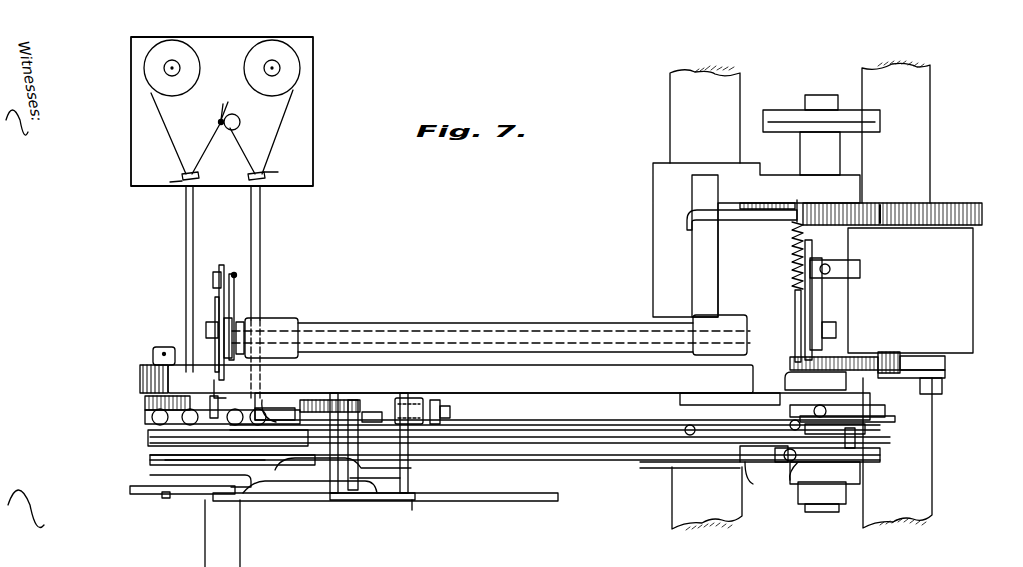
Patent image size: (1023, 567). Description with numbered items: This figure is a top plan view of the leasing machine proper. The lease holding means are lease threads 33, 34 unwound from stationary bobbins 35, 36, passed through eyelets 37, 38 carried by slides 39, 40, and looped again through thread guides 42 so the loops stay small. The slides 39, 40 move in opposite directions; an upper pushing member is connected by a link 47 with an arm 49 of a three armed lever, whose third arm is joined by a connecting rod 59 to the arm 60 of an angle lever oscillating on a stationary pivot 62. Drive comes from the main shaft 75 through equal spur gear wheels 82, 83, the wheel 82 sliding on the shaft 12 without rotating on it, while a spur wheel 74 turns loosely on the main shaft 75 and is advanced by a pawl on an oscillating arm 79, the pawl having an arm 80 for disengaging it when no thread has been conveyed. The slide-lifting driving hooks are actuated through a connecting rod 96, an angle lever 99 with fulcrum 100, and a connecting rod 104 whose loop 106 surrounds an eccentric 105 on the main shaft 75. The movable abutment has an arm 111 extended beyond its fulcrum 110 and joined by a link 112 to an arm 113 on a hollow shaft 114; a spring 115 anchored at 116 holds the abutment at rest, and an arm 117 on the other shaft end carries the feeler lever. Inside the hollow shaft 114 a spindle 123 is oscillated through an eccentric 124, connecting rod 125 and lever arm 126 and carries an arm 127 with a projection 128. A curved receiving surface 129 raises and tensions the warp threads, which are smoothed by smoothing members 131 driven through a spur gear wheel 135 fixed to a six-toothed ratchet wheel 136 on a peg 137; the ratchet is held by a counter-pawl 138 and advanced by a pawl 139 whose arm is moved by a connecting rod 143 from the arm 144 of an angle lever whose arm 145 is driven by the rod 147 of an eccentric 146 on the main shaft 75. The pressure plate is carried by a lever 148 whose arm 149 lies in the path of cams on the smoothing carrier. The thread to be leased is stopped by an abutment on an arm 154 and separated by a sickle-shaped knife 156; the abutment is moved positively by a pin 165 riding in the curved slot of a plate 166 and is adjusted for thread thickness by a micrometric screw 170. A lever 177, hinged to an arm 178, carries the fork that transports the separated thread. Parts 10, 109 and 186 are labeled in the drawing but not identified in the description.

The standard 10 is at (680, 128).
The shaft 12 is at (915, 130).
The lease thread 33 is at (186, 265).
The lease thread 34 is at (262, 263).
The stationary bobbin 35 is at (146, 72).
The stationary bobbin 36 is at (291, 77).
The eyelet 37 is at (167, 378).
The eyelet 38 is at (262, 406).
The slide 39 is at (145, 415).
The slide 40 is at (294, 412).
The thread guide 42 is at (215, 167).
The link 47 is at (238, 118).
The arm of three armed lever 49 is at (148, 438).
The connecting rod 59 is at (548, 437).
The arm of angle shaped lever 60 is at (698, 432).
The stationary pivot 62 is at (640, 425).
The spur wheel 74 is at (920, 358).
The main shaft 75 is at (826, 98).
The oscillating arm 79 is at (890, 352).
The arm 80 is at (942, 392).
The spur gear wheel 82 is at (950, 212).
The spur gear wheel 83 is at (886, 210).
The connecting rod 96 is at (504, 420).
The arm of angle lever 99 is at (841, 406).
The fulcrum 100 is at (830, 374).
The connecting rod 104 is at (888, 417).
The eccentric 105 is at (856, 440).
The loop 106 is at (866, 428).
The bracket 109 is at (945, 372).
The fulcrum 110 is at (752, 372).
The arm 111 is at (810, 372).
The link 112 is at (770, 311).
The arm 113 is at (794, 300).
The hollow shaft 114 is at (332, 330).
The spring 115 is at (792, 252).
The spring anchorage 116 is at (752, 216).
The arm 117 is at (234, 322).
The spindle 123 is at (206, 331).
The eccentric 124 is at (860, 275).
The connecting rod 125 is at (831, 266).
The lever arm 126 is at (822, 298).
The arm 127 is at (215, 303).
The projection 128 is at (213, 380).
The curved receiving surface 129 is at (213, 551).
The smoothing member 131 is at (394, 476).
The spur gear wheel 135 is at (372, 412).
The ratchet wheel 136 is at (408, 410).
The peg 137 is at (413, 495).
The counter-pawl 138 is at (436, 400).
The pawl 139 is at (346, 400).
The connecting rod 143 is at (540, 460).
The arm of angle lever 144 is at (650, 462).
The arm of angle lever 145 is at (764, 472).
The eccentric 146 is at (860, 462).
The eccentric rod 147 is at (802, 484).
The lever 148 is at (284, 503).
The arm 149 is at (422, 517).
The arm 154 is at (150, 461).
The separating knife 156 is at (338, 476).
The pin 165 is at (165, 498).
The plate 166 is at (130, 490).
The micrometric screw 170 is at (140, 374).
The lever 177 is at (222, 265).
The arm 178 is at (234, 272).
The frame 186 is at (780, 110).